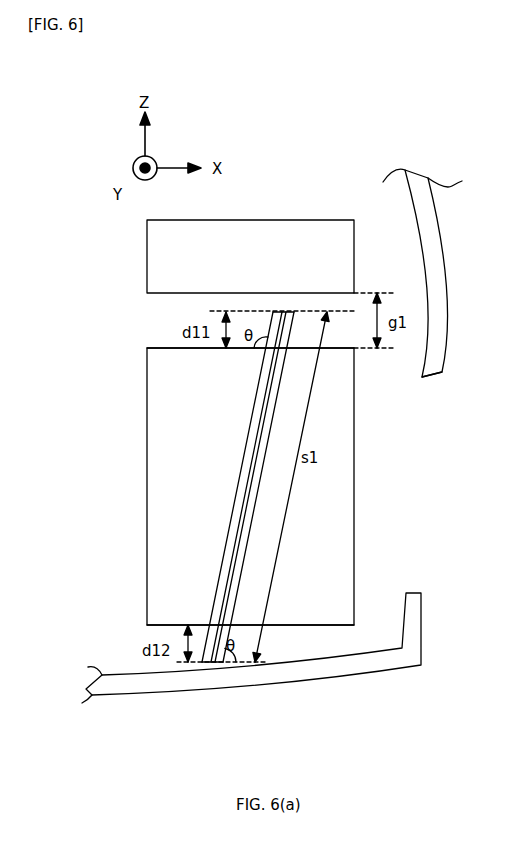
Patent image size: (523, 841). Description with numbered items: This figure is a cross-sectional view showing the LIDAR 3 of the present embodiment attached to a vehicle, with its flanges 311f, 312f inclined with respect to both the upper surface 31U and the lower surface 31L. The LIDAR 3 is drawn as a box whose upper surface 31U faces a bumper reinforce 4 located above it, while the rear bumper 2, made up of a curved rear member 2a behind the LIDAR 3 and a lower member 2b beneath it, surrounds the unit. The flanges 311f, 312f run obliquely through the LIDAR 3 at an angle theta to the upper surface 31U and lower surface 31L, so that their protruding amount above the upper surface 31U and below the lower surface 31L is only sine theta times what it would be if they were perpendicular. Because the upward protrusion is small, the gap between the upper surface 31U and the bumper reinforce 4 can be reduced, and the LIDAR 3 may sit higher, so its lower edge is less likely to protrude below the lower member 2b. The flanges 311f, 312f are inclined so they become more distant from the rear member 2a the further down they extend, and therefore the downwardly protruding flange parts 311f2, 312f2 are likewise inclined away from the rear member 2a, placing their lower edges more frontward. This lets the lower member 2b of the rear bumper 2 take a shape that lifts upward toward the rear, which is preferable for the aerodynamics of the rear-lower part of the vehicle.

The rear bumper 2 is at (432, 241).
The rear member 2a is at (442, 352).
The lower member 2b is at (320, 682).
The LIDAR 3 is at (148, 534).
The bumper reinforce 4 is at (147, 233).
The upper surface 31U is at (172, 348).
The lower surface 31L is at (313, 626).
The flange 311f is at (217, 663).
The flange 312f is at (205, 663).
The flange part 311f2 is at (240, 642).
The flange part 312f2 is at (210, 646).